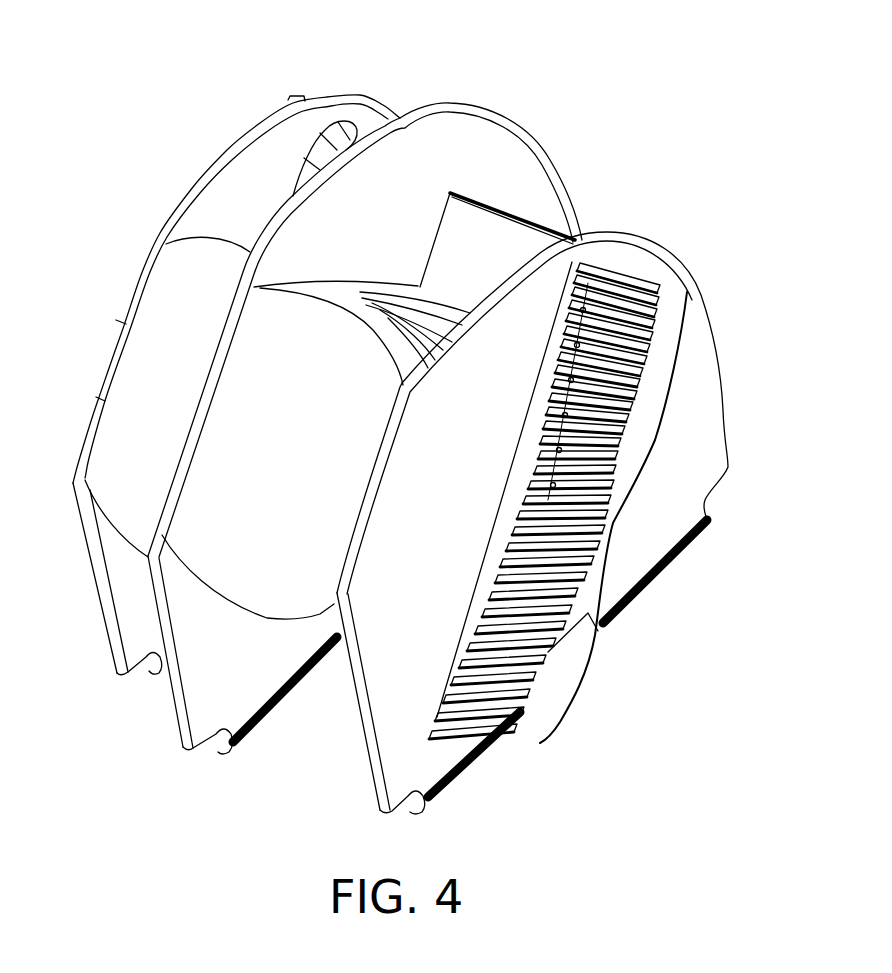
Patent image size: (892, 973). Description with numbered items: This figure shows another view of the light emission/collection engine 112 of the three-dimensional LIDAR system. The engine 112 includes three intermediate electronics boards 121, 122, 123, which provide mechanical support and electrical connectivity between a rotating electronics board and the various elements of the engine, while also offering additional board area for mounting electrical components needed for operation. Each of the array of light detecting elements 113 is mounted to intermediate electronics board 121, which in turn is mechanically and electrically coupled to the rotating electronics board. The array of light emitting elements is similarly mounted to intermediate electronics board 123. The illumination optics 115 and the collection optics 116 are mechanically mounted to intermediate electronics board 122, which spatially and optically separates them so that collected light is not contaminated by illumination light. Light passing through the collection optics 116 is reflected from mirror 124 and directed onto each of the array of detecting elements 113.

The light emission/collection engine 112 is at (138, 90).
The array of light detecting elements 113 is at (613, 517).
The illumination optics 115 is at (181, 387).
The collection optics 116 is at (294, 459).
The intermediate electronics board 121 is at (716, 410).
The intermediate electronics board 122 is at (508, 122).
The intermediate electronics board 123 is at (357, 100).
The mirror 124 is at (540, 236).